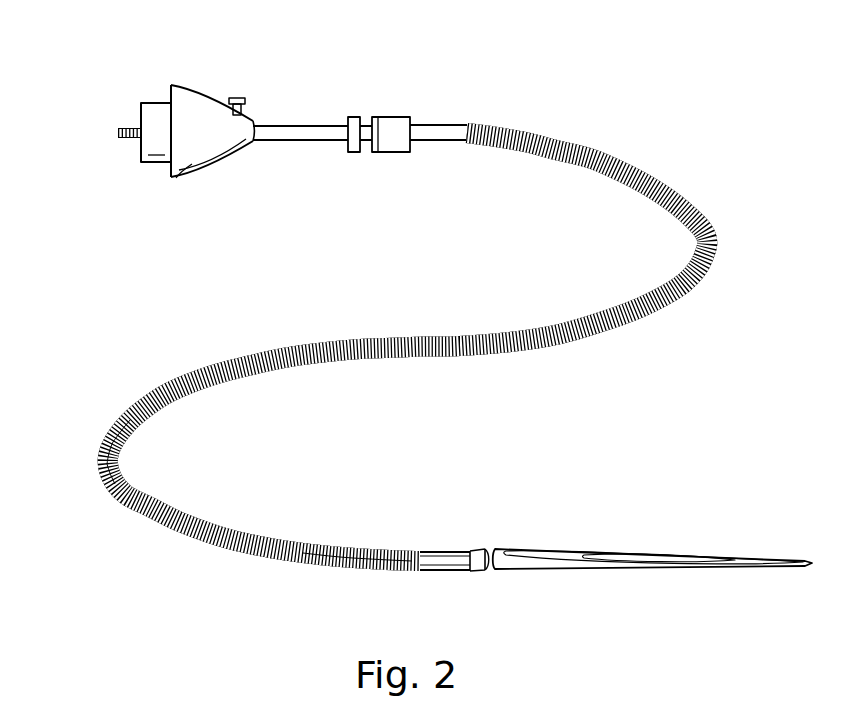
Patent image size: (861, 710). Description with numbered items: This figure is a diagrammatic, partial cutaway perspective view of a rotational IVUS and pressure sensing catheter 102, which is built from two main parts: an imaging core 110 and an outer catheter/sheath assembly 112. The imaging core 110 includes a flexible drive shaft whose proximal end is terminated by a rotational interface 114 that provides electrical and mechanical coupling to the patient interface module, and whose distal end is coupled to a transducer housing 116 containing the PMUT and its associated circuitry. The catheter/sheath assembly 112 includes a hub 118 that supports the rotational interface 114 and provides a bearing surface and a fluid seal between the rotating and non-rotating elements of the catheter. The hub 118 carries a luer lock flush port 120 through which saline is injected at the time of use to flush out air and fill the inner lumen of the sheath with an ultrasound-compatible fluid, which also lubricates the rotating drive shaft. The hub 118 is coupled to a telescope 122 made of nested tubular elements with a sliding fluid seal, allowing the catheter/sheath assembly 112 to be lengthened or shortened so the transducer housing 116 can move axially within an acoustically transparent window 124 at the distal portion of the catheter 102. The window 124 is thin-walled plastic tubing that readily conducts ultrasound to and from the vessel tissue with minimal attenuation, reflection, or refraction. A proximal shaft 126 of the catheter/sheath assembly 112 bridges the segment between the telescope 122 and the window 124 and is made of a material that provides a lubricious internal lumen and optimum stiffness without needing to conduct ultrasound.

The rotational IVUS and pressure sensing catheter 102 is at (416, 327).
The imaging core 110 is at (386, 335).
The catheter/sheath assembly 112 is at (97, 451).
The rotational interface 114 is at (118, 133).
The transducer housing 116 is at (448, 569).
The hub 118 is at (187, 87).
The luer lock flush port 120 is at (238, 97).
The telescope 122 is at (405, 107).
The acoustically transparent window 124 is at (352, 570).
The proximal shaft 126 is at (579, 138).